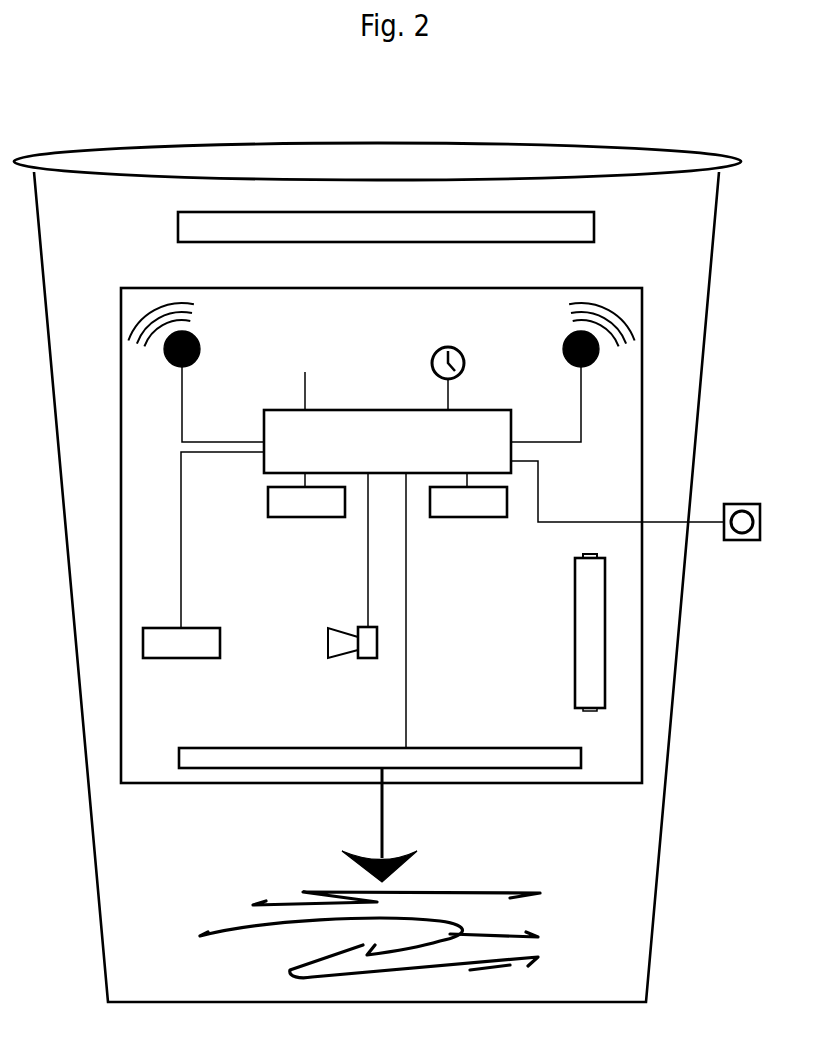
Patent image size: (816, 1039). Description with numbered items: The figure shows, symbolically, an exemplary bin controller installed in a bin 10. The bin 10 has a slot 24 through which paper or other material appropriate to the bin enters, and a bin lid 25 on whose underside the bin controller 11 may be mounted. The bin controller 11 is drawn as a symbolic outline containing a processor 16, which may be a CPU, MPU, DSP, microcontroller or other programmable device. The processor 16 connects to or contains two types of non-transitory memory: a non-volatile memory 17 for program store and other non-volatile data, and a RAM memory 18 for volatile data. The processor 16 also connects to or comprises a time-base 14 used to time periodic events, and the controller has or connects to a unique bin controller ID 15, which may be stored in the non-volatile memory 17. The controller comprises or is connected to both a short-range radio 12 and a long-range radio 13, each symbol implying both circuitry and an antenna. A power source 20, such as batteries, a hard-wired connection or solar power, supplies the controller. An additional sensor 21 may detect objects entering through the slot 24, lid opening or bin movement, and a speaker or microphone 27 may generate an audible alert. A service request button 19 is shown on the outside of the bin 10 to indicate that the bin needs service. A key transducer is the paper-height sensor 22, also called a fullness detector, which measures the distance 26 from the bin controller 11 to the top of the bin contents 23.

The bin 10 is at (711, 302).
The bin controller 11 is at (128, 535).
The short-range radio 12 is at (171, 361).
The long-range radio 13 is at (571, 361).
The time-base 14 is at (437, 355).
The bin controller ID 15 is at (292, 350).
The processor 16 is at (270, 427).
The non-volatile memory 17 is at (272, 511).
The RAM memory 18 is at (500, 503).
The service request button 19 is at (749, 510).
The power source 20 is at (580, 595).
The sensor 21 is at (204, 634).
The paper-height sensor 22 is at (463, 756).
The bin contents 23 is at (305, 918).
The slot 24 is at (258, 228).
The bin lid 25 is at (133, 160).
The distance 26 is at (385, 818).
The speaker or microphone 27 is at (341, 636).